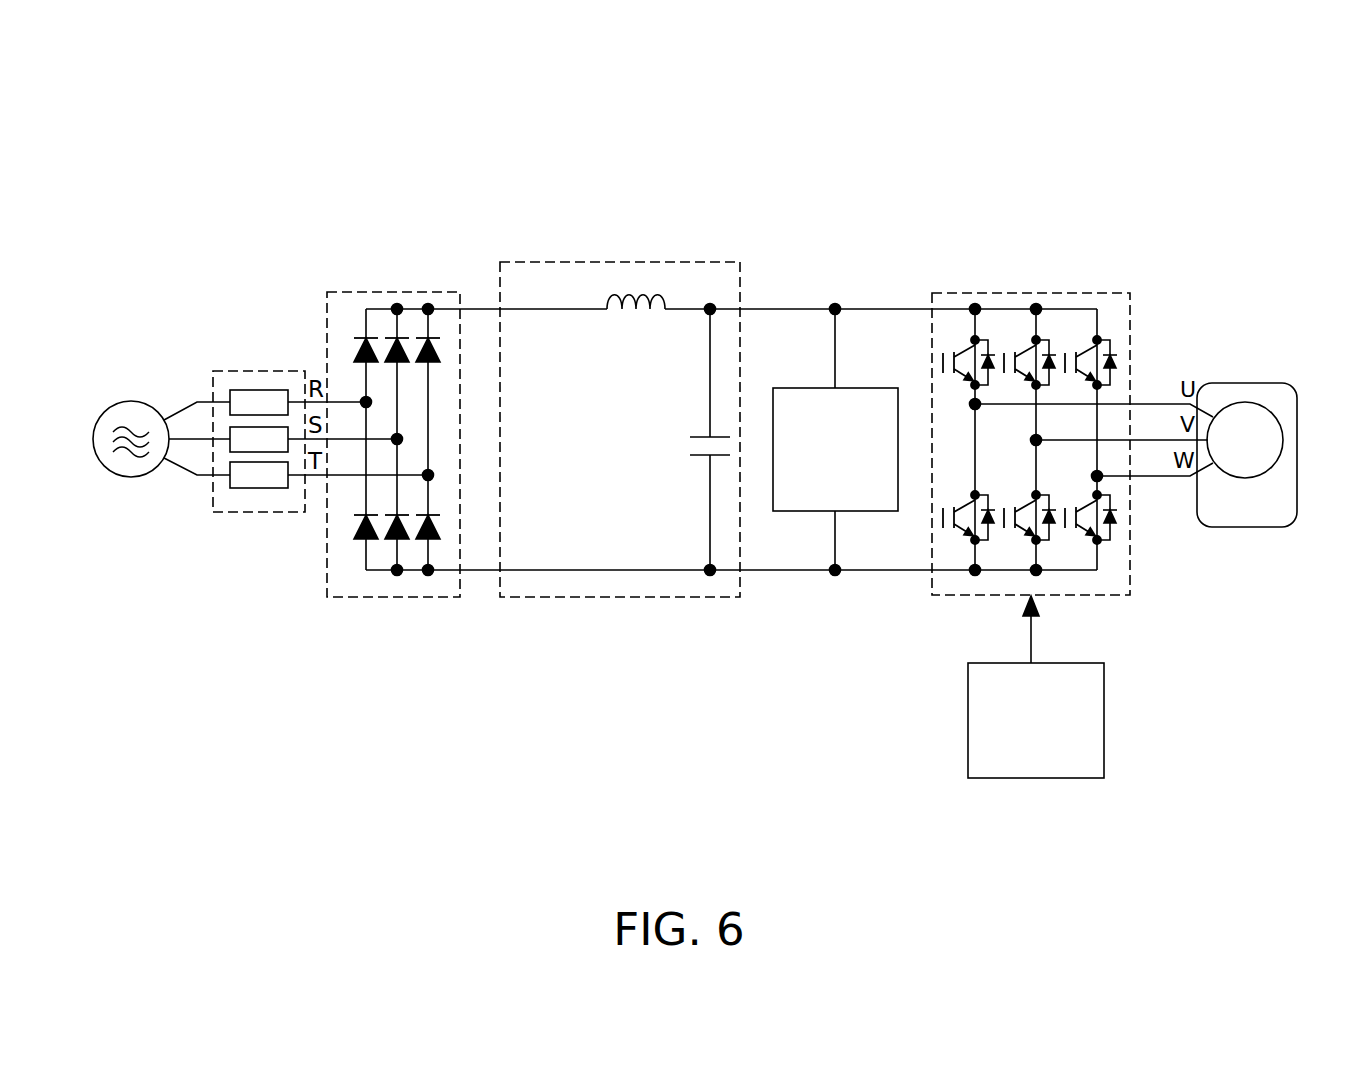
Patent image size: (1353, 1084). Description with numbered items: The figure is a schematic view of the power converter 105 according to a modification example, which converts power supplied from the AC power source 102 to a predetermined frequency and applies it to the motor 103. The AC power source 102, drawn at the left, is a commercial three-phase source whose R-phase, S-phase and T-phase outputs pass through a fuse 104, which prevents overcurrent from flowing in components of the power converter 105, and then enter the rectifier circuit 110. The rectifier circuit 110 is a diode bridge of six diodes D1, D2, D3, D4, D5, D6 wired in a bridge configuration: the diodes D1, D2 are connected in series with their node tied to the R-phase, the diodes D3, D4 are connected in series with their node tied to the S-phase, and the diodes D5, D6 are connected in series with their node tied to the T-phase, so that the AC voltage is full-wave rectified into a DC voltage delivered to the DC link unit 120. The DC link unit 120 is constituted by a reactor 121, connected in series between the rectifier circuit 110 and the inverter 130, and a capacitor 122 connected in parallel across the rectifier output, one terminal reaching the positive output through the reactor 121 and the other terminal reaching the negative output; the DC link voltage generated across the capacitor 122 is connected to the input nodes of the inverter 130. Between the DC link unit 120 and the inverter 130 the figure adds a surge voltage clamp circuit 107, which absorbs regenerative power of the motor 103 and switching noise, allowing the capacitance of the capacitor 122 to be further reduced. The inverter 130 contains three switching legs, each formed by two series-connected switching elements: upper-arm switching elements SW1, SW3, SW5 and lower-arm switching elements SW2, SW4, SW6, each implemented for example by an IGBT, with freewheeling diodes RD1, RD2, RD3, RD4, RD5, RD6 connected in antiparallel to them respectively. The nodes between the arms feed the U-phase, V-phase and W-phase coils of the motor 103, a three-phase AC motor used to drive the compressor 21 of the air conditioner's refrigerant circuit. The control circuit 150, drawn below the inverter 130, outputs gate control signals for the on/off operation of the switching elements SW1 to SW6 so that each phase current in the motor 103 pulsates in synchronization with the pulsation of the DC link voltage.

The power converter 105 is at (1175, 146).
The AC power source 102 is at (133, 472).
The fuse 104 is at (235, 371).
The rectifier circuit 110 is at (405, 415).
The DC link unit 120 is at (667, 384).
The reactor 121 is at (606, 334).
The capacitor 122 is at (692, 471).
The surge voltage clamp circuit 107 is at (808, 497).
The inverter 130 is at (1034, 428).
The control circuit 150 is at (1045, 758).
The motor 103 is at (1260, 465).
The compressor 21 is at (1252, 463).
The diode D1 is at (366, 350).
The diode D2 is at (362, 537).
The diode D3 is at (400, 350).
The diode D4 is at (393, 537).
The diode D5 is at (430, 352).
The diode D6 is at (425, 537).
The switching element SW1 is at (950, 368).
The switching element SW2 is at (945, 527).
The switching element SW3 is at (1012, 365).
The switching element SW4 is at (1007, 527).
The switching element SW5 is at (1075, 365).
The switching element SW6 is at (1068, 527).
The freewheeling diode RD1 is at (988, 362).
The freewheeling diode RD2 is at (988, 523).
The freewheeling diode RD3 is at (1050, 362).
The freewheeling diode RD4 is at (1050, 523).
The freewheeling diode RD5 is at (1111, 362).
The freewheeling diode RD6 is at (1111, 523).